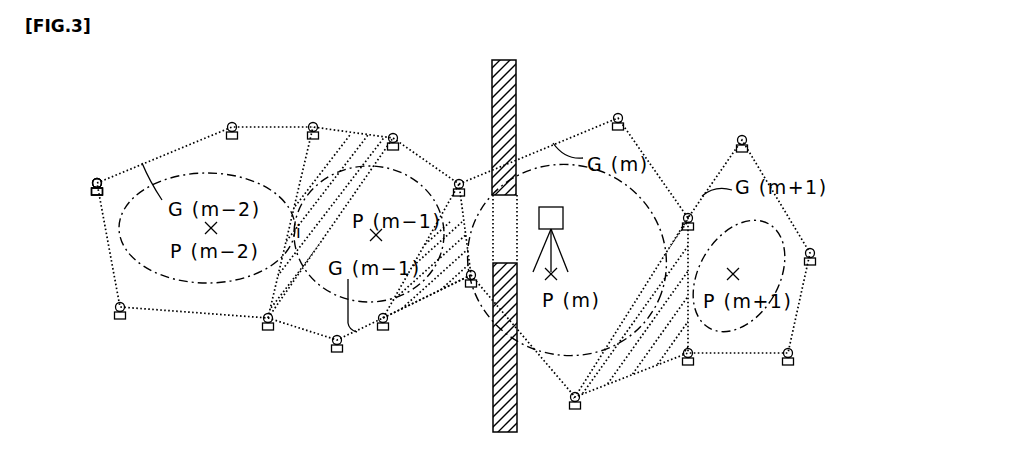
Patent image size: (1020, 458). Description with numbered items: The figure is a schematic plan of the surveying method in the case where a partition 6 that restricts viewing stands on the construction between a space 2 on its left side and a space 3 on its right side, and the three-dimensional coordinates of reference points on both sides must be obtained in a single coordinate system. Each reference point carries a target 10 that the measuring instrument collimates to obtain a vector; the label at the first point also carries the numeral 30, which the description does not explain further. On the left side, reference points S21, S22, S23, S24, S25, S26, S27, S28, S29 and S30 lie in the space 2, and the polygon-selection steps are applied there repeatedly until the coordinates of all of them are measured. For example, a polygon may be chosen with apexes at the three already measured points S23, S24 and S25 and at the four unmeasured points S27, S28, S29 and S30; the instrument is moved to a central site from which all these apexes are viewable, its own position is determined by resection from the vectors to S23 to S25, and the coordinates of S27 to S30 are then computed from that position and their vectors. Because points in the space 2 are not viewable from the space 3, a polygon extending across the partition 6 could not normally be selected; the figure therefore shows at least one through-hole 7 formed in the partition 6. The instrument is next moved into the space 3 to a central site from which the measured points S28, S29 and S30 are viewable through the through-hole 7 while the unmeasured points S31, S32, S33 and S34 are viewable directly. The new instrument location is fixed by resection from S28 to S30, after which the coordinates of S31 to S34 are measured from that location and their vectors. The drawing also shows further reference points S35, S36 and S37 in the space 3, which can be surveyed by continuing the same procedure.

The space 2 is at (422, 97).
The space 3 is at (567, 97).
The partition 6 is at (492, 102).
The through-hole 7 is at (505, 217).
The target 10 is at (97, 178).
The wireless communication unit 30 is at (97, 187).
The reference point S21 is at (70, 184).
The reference point S22 is at (113, 330).
The reference point S23 is at (250, 341).
The reference point S24 is at (401, 128).
The reference point S25 is at (319, 117).
The reference point S26 is at (237, 117).
The reference point S27 is at (343, 363).
The reference point S28 is at (406, 341).
The reference point S29 is at (460, 297).
The reference point S30 is at (460, 173).
The reference point S31 is at (604, 414).
The reference point S32 is at (707, 376).
The reference point S33 is at (660, 219).
The reference point S34 is at (642, 107).
The sensor node S35 is at (758, 129).
The sensor node S36 is at (825, 237).
The sensor node S37 is at (796, 376).